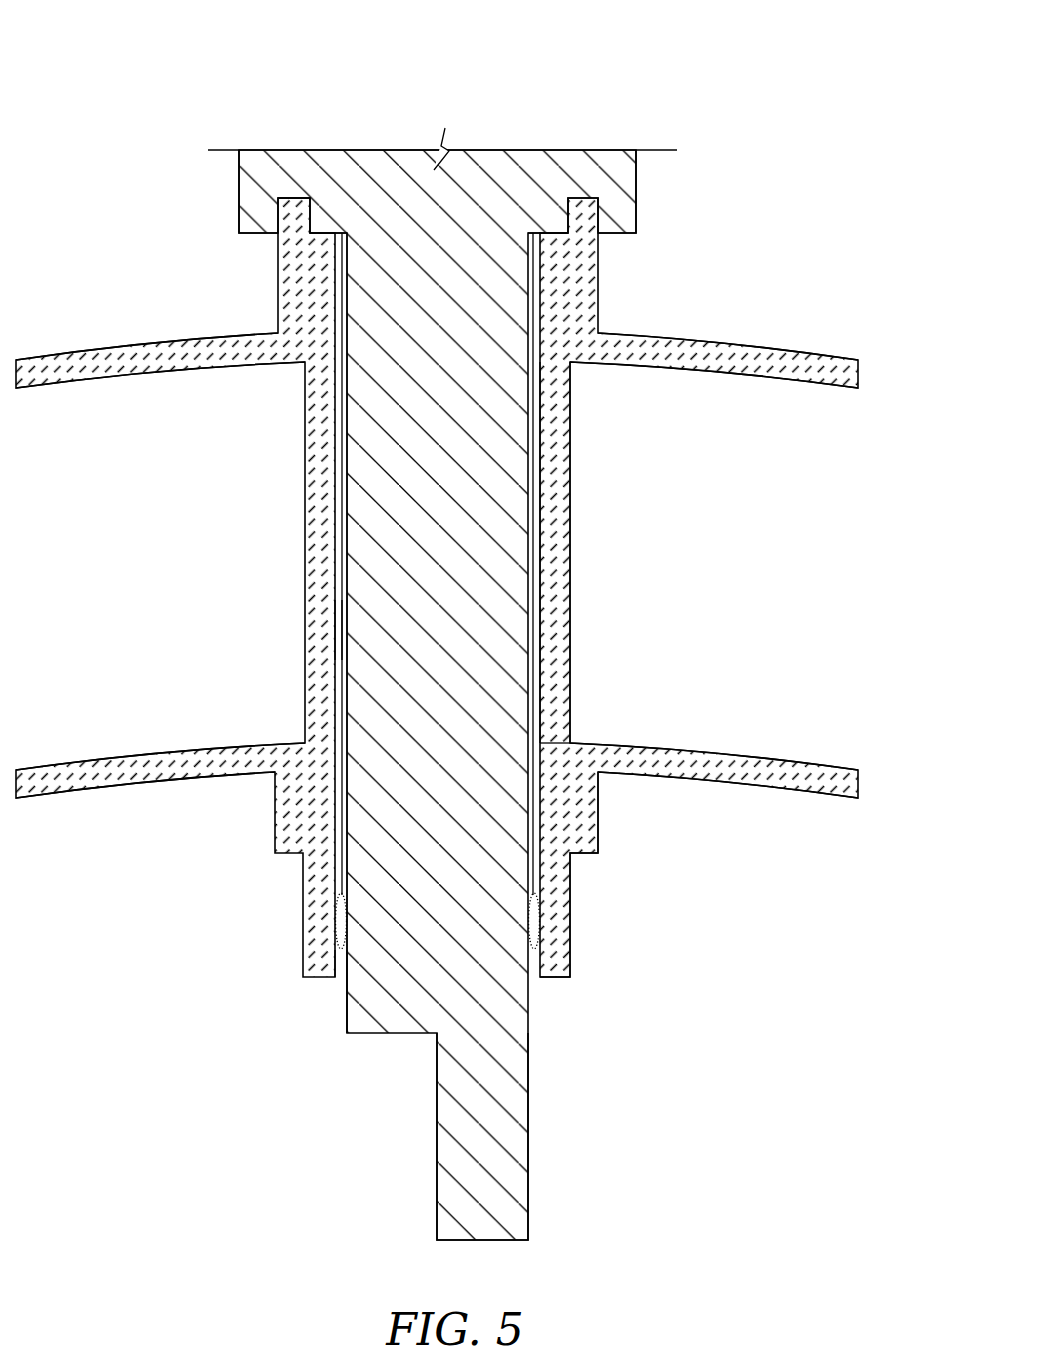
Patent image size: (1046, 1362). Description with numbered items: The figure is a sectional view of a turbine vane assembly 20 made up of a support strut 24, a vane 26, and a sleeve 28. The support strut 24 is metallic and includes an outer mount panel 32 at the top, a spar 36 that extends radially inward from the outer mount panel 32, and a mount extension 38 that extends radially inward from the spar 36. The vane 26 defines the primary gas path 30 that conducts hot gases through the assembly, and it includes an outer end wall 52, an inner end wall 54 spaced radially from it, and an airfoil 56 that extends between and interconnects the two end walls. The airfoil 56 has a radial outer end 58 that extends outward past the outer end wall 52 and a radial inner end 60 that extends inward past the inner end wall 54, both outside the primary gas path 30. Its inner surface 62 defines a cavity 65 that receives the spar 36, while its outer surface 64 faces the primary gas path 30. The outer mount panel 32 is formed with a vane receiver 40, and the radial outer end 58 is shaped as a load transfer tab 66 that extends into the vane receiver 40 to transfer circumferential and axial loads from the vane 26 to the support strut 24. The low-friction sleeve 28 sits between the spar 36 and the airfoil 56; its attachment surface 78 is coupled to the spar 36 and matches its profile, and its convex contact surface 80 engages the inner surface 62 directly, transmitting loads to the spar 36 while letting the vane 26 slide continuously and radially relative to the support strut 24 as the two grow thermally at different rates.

The turbine vane assembly 20 is at (137, 80).
The support strut 24 is at (363, 1038).
The vane 26 is at (698, 606).
The sleeve 28 is at (537, 950).
The primary gas path 30 is at (86, 546).
The outer mount panel 32 is at (239, 188).
The spar 36 is at (347, 598).
The mount extension 38 is at (530, 1112).
The vane receiver 40 is at (292, 217).
The outer end wall 52 is at (718, 335).
The inner end wall 54 is at (745, 745).
The airfoil 56 is at (575, 675).
The radial outer end 58 is at (598, 283).
The radial inner end 60 is at (595, 887).
The inner surface 62 is at (537, 440).
The outer surface 64 is at (570, 615).
The cavity 65 is at (345, 630).
The load transfer tab 66 is at (293, 198).
The attachment surface 78 is at (342, 938).
The contact surface 80 is at (333, 922).